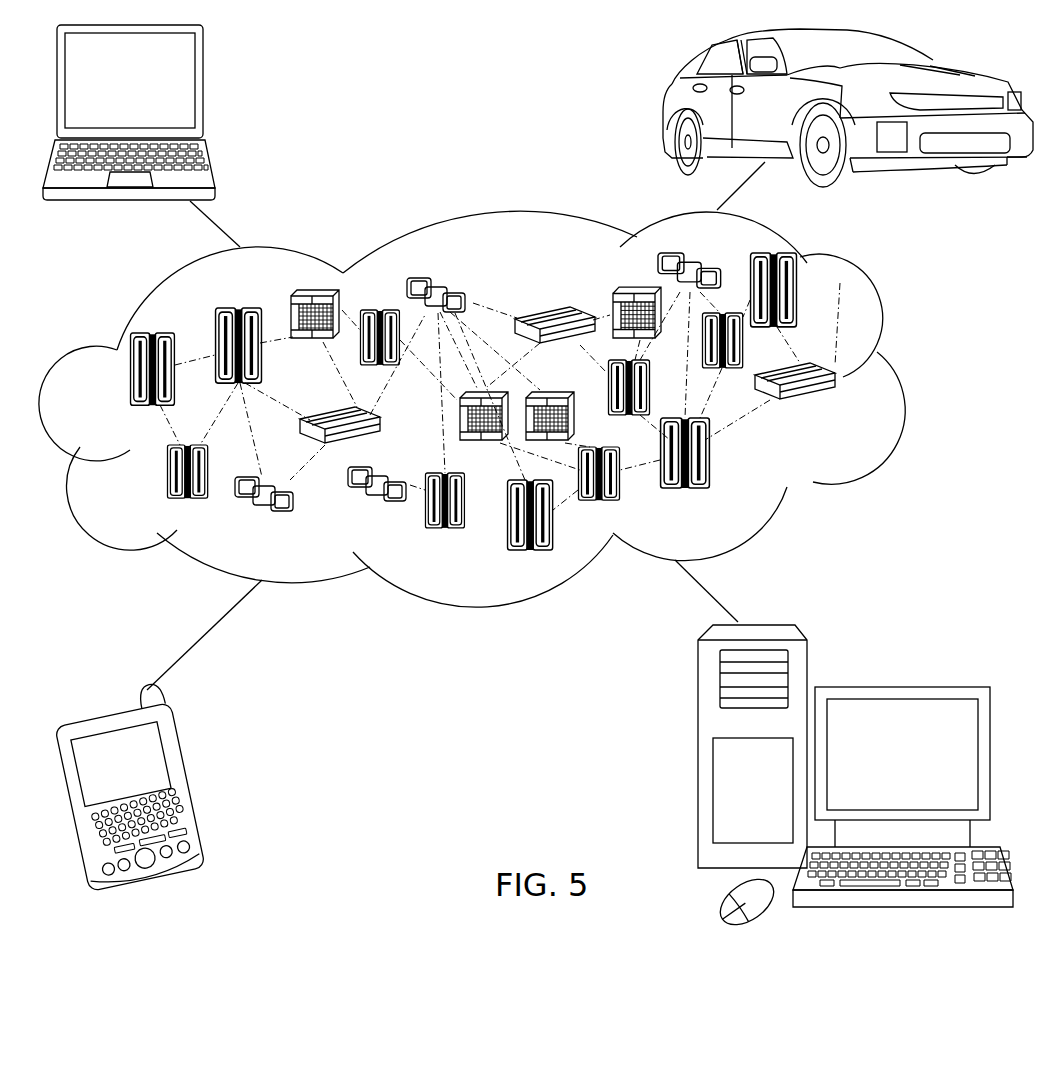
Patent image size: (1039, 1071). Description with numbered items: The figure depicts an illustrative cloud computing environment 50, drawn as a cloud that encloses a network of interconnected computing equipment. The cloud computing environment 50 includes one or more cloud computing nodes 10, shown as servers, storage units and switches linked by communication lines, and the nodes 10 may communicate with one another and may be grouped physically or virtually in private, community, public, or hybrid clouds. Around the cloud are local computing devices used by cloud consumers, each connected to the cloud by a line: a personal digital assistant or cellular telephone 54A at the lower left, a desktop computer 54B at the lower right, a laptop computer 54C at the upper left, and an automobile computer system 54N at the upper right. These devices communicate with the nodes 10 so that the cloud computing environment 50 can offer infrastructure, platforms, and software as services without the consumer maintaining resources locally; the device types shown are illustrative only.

The laptop computer 54C is at (207, 89).
The automobile computer system 54N is at (667, 110).
The personal digital assistant (PDA) or cellular telephone 54A is at (193, 787).
The desktop computer 54B is at (898, 685).
The cloud computing environment 50 is at (898, 381).
The cloud computing node 10 is at (840, 412).